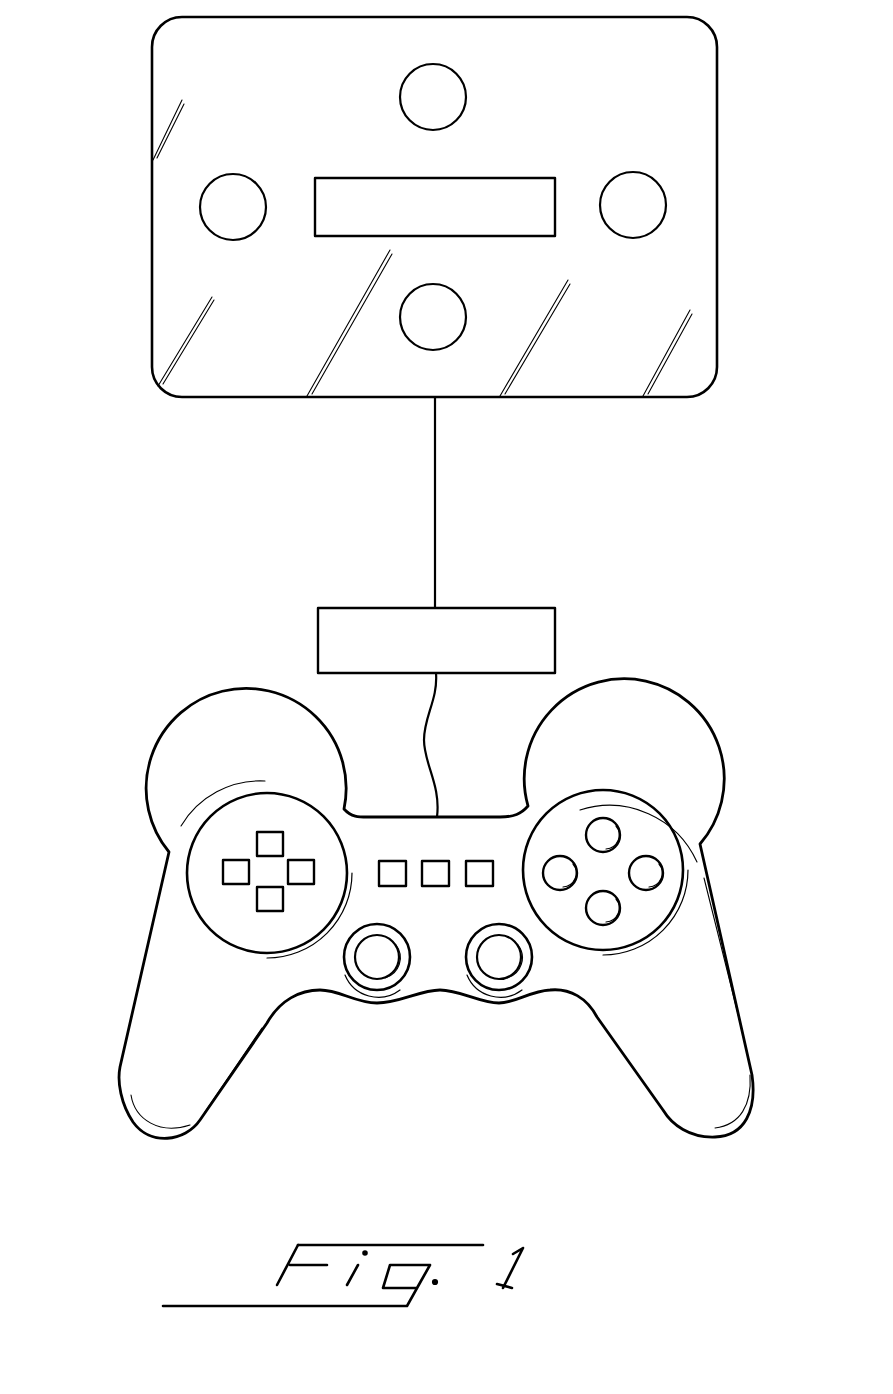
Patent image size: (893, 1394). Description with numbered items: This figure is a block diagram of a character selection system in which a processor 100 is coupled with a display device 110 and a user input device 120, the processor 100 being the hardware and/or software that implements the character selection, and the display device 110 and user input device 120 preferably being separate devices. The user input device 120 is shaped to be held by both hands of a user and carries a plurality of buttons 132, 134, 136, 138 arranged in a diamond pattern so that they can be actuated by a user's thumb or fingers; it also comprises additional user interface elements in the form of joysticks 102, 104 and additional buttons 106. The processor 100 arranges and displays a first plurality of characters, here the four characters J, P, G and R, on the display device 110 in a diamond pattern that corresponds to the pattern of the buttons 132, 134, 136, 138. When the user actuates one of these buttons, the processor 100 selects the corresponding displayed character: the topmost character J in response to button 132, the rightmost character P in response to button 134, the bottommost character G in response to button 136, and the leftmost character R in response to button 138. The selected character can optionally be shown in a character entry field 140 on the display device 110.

The processor 100 is at (537, 608).
The display device 110 is at (655, 398).
The character entry field 140 is at (518, 178).
The user input device 120 is at (143, 988).
The additional buttons 106 is at (390, 843).
The joystick 102 is at (373, 968).
The joystick 104 is at (503, 963).
The button 132 is at (603, 822).
The button 134 is at (651, 866).
The button 136 is at (607, 917).
The button 138 is at (552, 865).